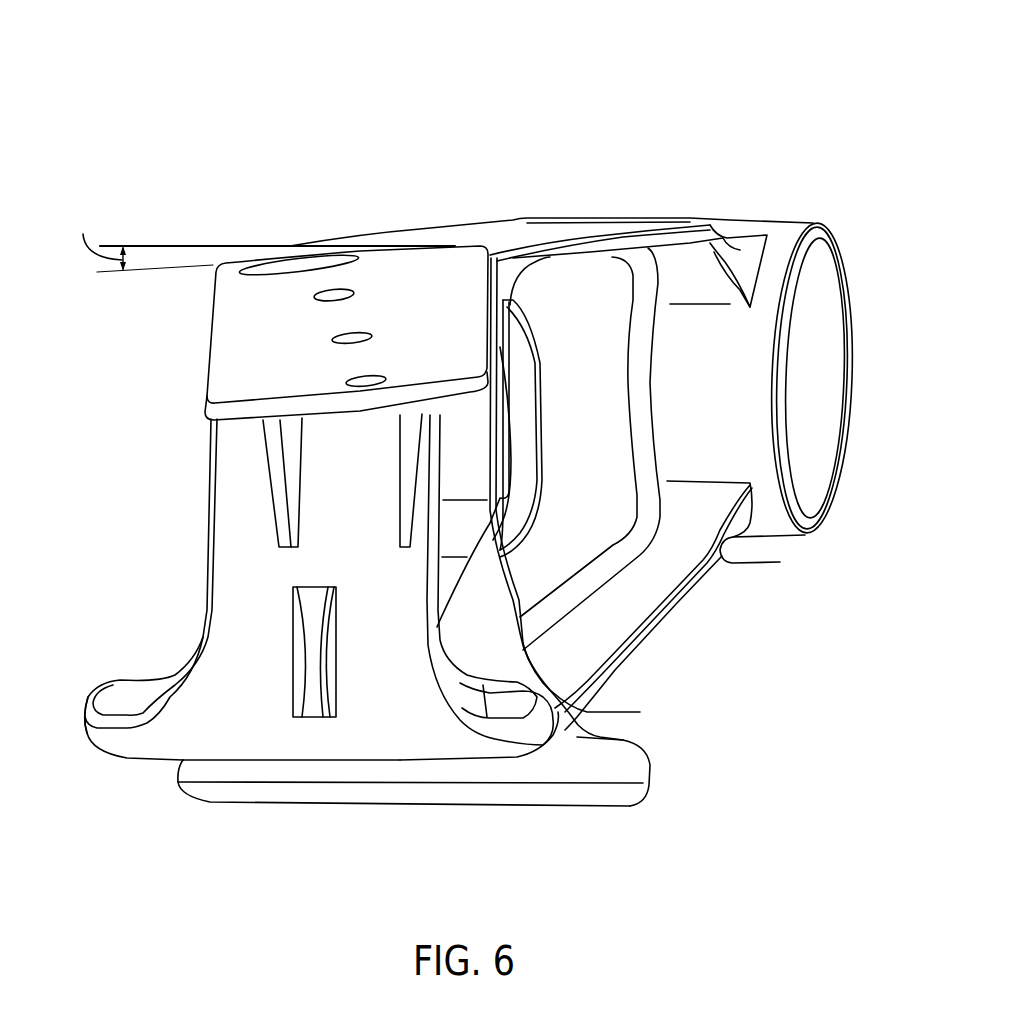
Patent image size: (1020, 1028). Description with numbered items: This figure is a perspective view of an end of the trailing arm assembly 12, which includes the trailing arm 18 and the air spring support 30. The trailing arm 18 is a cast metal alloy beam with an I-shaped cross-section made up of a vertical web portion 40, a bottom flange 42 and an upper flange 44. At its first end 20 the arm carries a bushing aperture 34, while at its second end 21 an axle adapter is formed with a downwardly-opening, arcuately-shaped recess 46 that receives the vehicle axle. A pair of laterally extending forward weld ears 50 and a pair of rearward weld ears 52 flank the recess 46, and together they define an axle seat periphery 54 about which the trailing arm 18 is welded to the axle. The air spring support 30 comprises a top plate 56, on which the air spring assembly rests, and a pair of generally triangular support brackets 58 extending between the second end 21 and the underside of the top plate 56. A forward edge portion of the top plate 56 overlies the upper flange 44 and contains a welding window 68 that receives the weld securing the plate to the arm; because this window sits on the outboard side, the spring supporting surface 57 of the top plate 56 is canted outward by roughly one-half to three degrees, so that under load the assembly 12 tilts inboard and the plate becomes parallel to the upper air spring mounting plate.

The trailing arm assembly 12 is at (462, 138).
The trailing arm 18 is at (437, 234).
The first end 20 is at (720, 550).
The second end 21 is at (587, 709).
The air spring support 30 is at (210, 302).
The bushing aperture 34 is at (820, 307).
The vertical web portion 40 is at (793, 493).
The bottom flange 42 is at (655, 633).
The upper flange 44 is at (667, 240).
The arcuately-shaped recess 46 is at (413, 782).
The forward weld ears 50 is at (110, 700).
The rearward weld ears 52 is at (652, 767).
The axle seat periphery 54 is at (558, 602).
The top plate 56 is at (223, 280).
The spring supporting surface 57 is at (240, 352).
The support brackets 58 is at (410, 428).
The welding window 68 is at (287, 260).